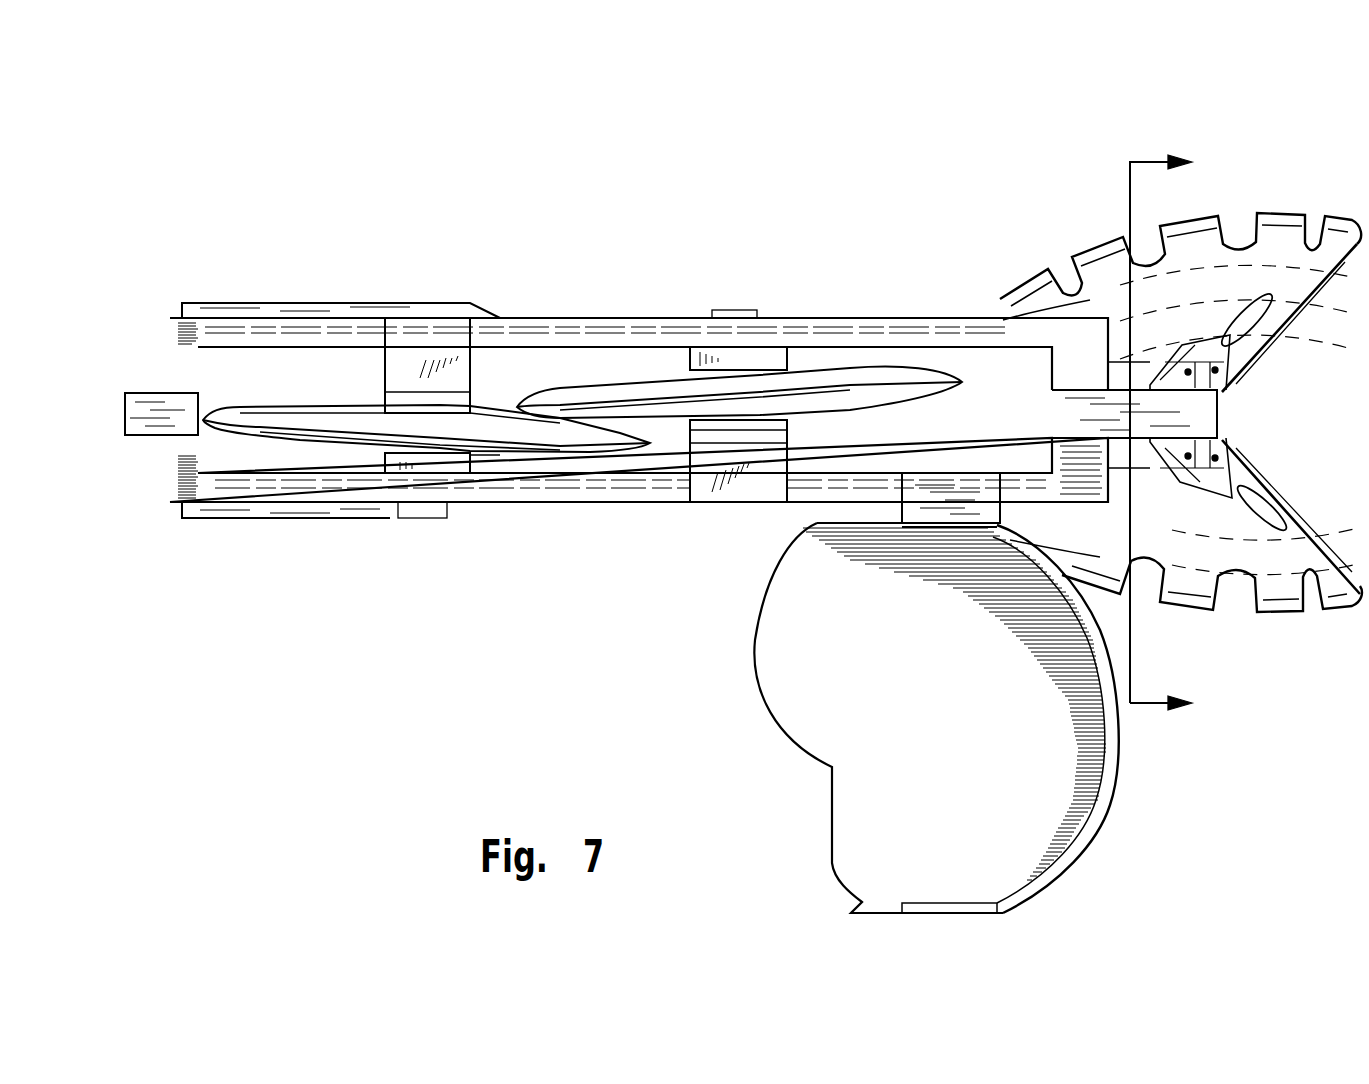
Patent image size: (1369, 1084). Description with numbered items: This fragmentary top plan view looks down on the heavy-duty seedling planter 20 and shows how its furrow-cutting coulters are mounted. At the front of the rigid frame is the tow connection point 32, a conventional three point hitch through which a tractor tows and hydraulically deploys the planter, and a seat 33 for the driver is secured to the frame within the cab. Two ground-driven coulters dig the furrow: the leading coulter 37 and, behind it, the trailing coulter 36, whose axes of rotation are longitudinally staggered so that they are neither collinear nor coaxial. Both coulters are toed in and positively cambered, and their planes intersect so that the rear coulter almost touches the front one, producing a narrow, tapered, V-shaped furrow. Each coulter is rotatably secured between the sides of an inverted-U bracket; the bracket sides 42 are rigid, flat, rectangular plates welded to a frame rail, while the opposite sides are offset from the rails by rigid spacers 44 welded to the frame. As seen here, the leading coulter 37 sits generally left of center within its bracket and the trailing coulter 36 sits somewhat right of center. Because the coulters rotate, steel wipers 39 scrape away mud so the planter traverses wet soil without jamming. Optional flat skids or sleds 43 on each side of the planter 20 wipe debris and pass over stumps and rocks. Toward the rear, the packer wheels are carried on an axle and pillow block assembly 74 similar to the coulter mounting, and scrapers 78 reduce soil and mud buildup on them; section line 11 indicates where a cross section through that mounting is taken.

The seedling planter 20 is at (624, 225).
The front tow connection point 32 is at (160, 398).
The seat 33 is at (828, 653).
The trailing coulter 36 is at (892, 375).
The leading coulter 37 is at (365, 447).
The steel wipers 39 is at (493, 458).
The bracket side 42 is at (773, 358).
The skids or sleds 43 is at (236, 306).
The rigid spacers 44 is at (402, 375).
The pillow block assembly 74 is at (1274, 310).
The scrapers 78 is at (1245, 450).
The section line 11- 11 is at (1190, 433).